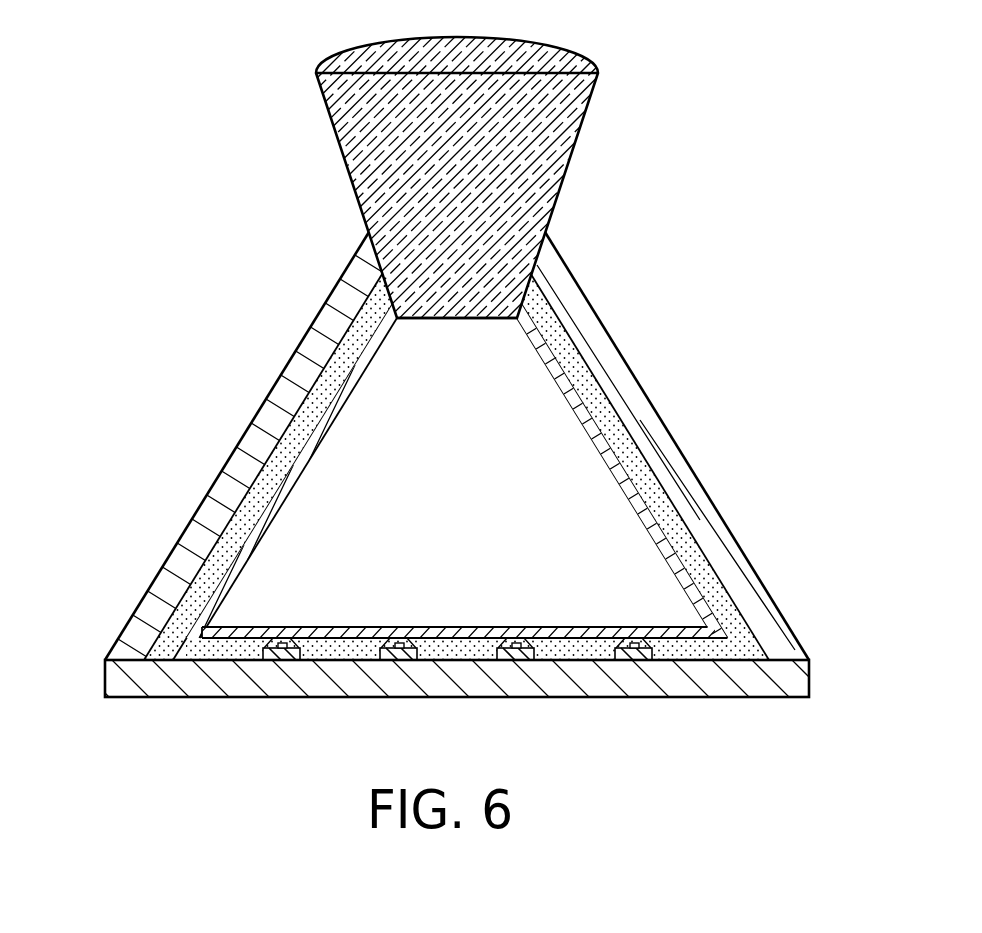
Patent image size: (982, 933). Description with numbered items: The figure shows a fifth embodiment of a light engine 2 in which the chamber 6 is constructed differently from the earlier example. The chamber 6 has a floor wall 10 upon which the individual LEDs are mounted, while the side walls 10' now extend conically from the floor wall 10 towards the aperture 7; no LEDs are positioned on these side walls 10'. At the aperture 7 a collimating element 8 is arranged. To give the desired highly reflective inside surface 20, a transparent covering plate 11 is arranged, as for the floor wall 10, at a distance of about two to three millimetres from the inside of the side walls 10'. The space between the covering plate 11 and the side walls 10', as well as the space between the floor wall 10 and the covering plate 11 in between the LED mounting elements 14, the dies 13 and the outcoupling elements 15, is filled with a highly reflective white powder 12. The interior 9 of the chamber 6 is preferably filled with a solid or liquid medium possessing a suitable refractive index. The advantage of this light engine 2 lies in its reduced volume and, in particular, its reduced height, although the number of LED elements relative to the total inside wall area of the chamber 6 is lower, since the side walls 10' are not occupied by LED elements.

The light engine 2 is at (697, 134).
The chamber 6 is at (305, 335).
The aperture 7 is at (452, 336).
The collimating element 8 is at (537, 177).
The interior 9 is at (553, 460).
The floor wall 10 is at (450, 713).
The side walls 10' is at (670, 447).
The transparent covering plate 11 is at (692, 542).
The highly reflective white powder 12 is at (676, 505).
The dies 13 is at (393, 645).
The LED mounting elements 14 is at (515, 662).
The outcoupling elements 15 is at (506, 645).
The highly reflective inside surface 20 is at (545, 368).